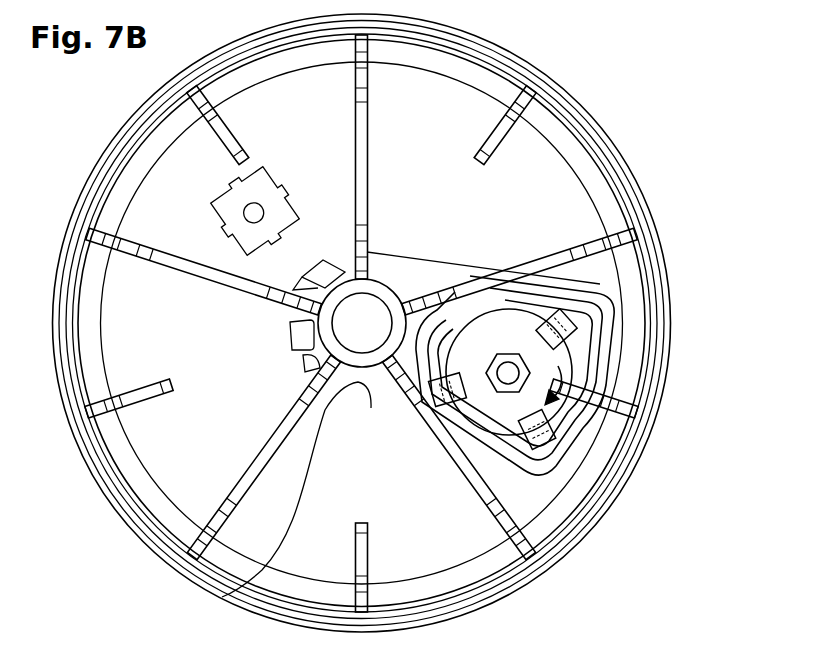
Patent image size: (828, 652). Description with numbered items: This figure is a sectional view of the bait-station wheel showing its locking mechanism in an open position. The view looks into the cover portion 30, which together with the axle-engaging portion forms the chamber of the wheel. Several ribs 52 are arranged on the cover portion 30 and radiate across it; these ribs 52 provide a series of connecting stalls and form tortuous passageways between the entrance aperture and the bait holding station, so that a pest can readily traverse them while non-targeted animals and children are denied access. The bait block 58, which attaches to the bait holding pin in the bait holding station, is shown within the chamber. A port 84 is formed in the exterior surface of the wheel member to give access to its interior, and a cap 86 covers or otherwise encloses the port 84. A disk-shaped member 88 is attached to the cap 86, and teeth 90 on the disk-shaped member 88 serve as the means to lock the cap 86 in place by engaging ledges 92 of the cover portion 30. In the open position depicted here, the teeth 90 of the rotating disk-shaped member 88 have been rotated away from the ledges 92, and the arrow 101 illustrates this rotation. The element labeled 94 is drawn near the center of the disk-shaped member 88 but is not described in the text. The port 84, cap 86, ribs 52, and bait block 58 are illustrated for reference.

The cover portion 30 is at (577, 100).
The ribs 52 is at (367, 248).
The bait block 58 is at (212, 203).
The port 84 is at (222, 597).
The cap 86 is at (443, 267).
The disk-shaped member 88 is at (558, 352).
The teeth 90 is at (570, 313).
The ledges 92 is at (560, 287).
The hex nut 94 is at (512, 378).
The arrow 101 is at (563, 387).